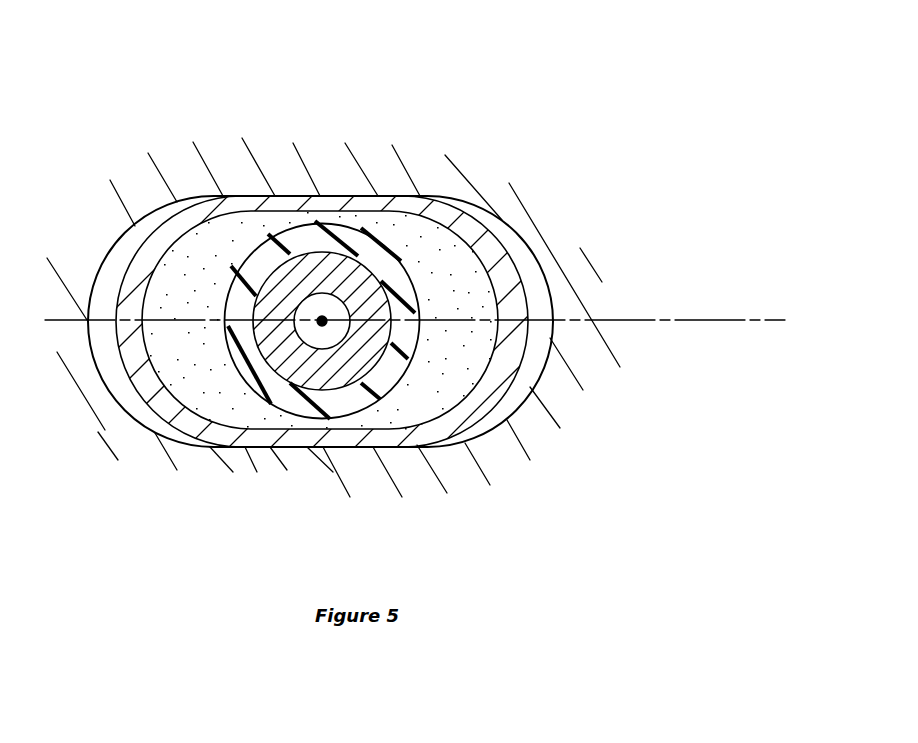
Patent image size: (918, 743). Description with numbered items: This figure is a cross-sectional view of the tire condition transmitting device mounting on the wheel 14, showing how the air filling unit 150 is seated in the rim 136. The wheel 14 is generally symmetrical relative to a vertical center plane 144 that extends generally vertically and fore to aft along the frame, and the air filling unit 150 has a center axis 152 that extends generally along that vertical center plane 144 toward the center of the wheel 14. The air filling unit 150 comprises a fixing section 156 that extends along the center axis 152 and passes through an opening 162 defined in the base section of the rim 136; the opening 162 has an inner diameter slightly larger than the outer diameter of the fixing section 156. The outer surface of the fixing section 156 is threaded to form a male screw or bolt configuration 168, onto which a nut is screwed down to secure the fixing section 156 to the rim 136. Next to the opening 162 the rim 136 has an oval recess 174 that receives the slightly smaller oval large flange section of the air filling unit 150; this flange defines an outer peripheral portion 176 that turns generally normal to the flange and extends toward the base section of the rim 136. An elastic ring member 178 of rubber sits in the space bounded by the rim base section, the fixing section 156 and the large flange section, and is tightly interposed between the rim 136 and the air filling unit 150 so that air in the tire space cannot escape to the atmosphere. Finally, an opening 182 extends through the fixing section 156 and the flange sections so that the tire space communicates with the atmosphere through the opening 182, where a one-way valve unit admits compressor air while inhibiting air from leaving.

The front wheel 14 is at (708, 96).
The rim 136 is at (188, 174).
The vertical center plane 144 is at (662, 320).
The air filling unit 150 is at (515, 157).
The center axis 152 is at (323, 326).
The fixing section 156 is at (358, 256).
The opening 162 is at (284, 228).
The threaded outer surface 168 is at (400, 236).
The oval recess 174 is at (103, 250).
The outer peripheral portion 176 is at (150, 395).
The elastic ring member 178 is at (387, 375).
The opening 182 is at (310, 313).